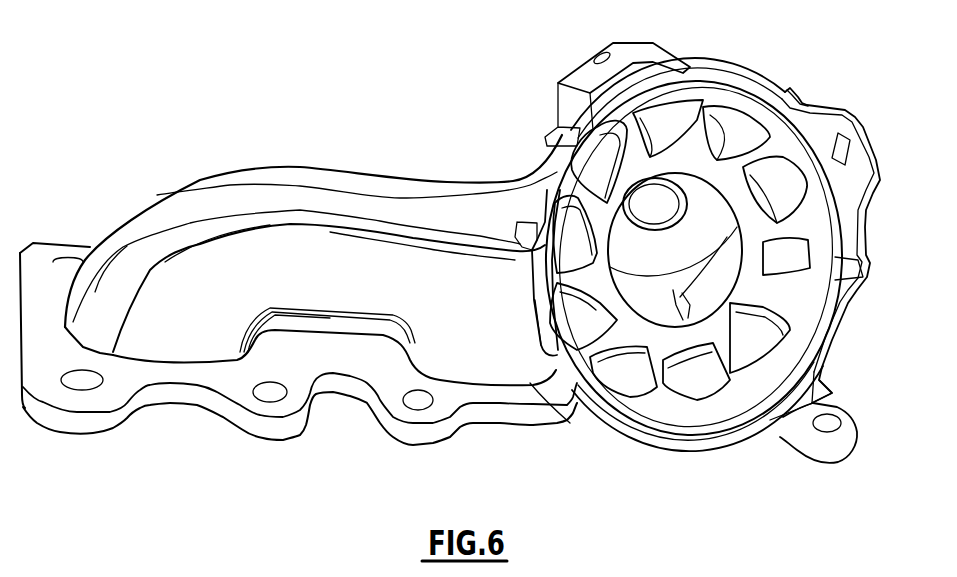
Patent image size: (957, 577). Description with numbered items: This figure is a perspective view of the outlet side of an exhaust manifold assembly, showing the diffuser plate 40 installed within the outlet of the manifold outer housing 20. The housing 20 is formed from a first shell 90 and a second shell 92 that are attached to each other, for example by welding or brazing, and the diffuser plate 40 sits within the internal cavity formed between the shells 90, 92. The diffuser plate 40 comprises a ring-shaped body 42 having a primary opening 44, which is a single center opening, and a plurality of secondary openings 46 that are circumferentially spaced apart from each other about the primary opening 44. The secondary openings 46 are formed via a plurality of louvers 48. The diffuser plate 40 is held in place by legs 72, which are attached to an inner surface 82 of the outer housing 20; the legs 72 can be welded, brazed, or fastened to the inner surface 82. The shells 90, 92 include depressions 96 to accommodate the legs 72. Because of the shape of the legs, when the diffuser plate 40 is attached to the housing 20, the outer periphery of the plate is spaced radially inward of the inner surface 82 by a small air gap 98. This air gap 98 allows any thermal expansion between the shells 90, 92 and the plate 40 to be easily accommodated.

The outer housing 20 is at (322, 217).
The diffuser plate 40 is at (727, 403).
The ring-shaped body 42 is at (795, 312).
The primary opening 44 is at (705, 200).
The secondary openings 46 is at (647, 140).
The louvers 48 is at (640, 383).
The legs 72 is at (790, 87).
The inner surface 82 is at (836, 240).
The first shell 90 is at (557, 190).
The second shell 92 is at (545, 358).
The depressions 96 is at (730, 70).
The air gap 98 is at (813, 350).